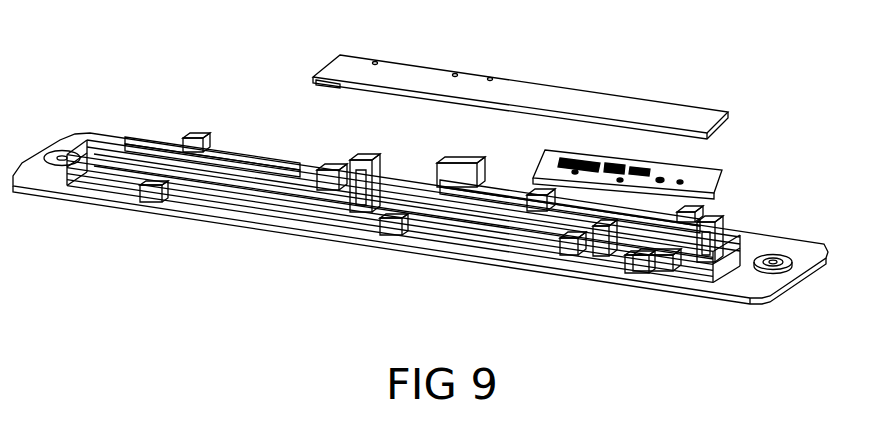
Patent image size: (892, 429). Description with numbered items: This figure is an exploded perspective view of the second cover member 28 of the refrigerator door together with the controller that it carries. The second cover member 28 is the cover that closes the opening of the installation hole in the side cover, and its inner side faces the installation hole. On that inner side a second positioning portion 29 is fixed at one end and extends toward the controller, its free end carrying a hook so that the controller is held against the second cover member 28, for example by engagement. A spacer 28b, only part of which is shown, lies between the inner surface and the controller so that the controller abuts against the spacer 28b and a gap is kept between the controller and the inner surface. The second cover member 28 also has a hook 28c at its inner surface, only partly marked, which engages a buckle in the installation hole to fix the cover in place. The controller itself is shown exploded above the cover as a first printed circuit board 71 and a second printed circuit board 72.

The second cover member 28 is at (803, 258).
The spacer 28b is at (300, 165).
The hook 28c is at (192, 135).
The second positioning portion 29 is at (352, 162).
The first printed circuit board 71 is at (668, 110).
The second printed circuit board 72 is at (707, 160).